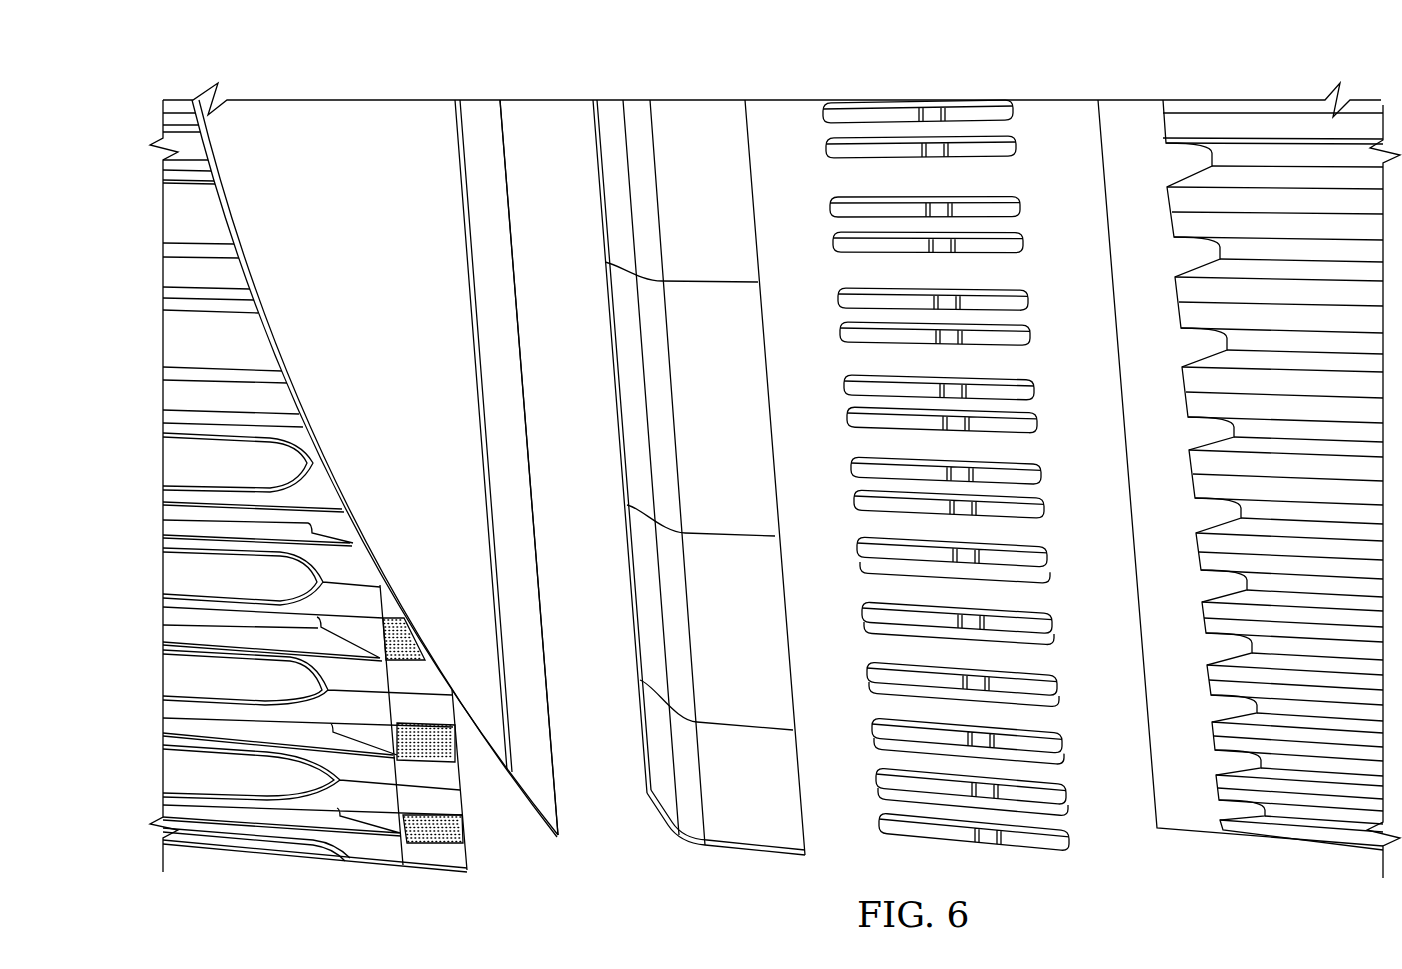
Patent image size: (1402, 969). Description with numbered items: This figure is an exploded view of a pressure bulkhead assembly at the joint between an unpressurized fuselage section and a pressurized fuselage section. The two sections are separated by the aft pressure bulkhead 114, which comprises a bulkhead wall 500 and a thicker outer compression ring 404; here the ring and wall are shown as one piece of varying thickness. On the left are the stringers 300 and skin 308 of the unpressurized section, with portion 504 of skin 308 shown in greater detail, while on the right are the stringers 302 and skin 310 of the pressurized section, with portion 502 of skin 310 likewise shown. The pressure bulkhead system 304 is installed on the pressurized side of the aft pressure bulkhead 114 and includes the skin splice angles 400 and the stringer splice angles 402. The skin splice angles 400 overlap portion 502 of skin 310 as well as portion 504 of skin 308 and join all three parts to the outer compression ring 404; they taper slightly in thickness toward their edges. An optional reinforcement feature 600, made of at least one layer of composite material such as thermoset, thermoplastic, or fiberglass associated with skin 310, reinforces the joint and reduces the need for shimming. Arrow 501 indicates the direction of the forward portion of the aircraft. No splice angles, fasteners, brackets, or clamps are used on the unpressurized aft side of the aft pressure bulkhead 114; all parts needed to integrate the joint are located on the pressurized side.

The aft pressure bulkhead 114 is at (325, 118).
The stringers 300 is at (193, 787).
The stringers 302 is at (1287, 86).
The pressure bulkhead system 304 is at (518, 68).
The skin 308 is at (172, 340).
The skin 310 is at (1138, 610).
The skin splice angles 400 is at (666, 90).
The stringer splice angles 402 is at (960, 86).
The outer compression ring 404 is at (530, 672).
The bulkhead wall 500 is at (394, 305).
The arrow 501 is at (726, 864).
The portion of skin 502 is at (1220, 836).
The portion of skin 504 is at (467, 876).
The reinforcement feature 600 is at (452, 830).